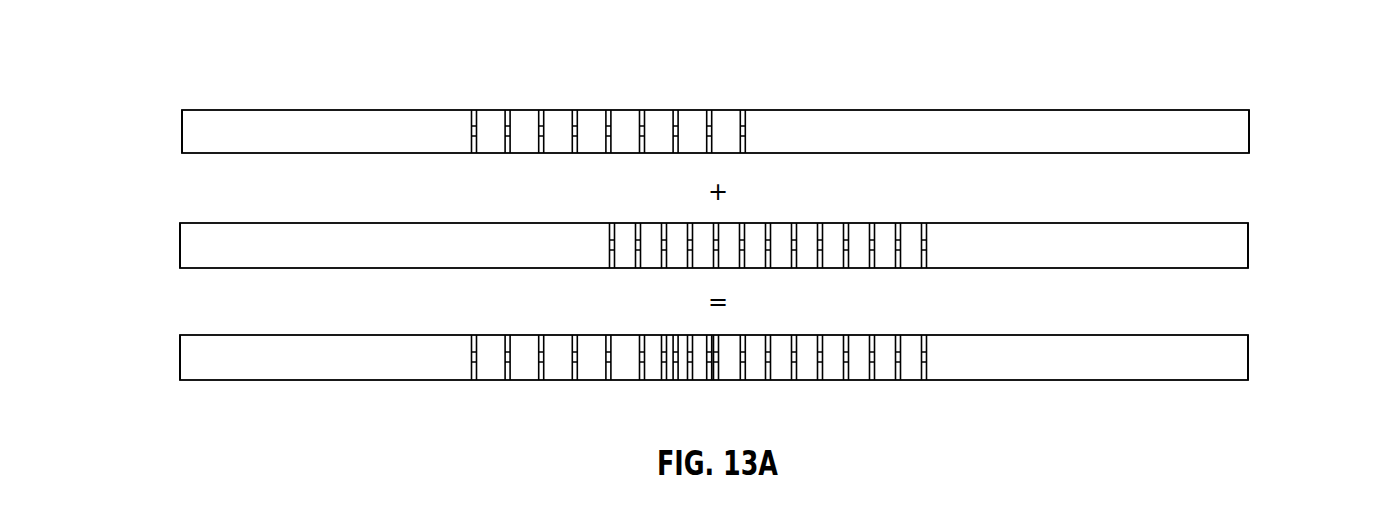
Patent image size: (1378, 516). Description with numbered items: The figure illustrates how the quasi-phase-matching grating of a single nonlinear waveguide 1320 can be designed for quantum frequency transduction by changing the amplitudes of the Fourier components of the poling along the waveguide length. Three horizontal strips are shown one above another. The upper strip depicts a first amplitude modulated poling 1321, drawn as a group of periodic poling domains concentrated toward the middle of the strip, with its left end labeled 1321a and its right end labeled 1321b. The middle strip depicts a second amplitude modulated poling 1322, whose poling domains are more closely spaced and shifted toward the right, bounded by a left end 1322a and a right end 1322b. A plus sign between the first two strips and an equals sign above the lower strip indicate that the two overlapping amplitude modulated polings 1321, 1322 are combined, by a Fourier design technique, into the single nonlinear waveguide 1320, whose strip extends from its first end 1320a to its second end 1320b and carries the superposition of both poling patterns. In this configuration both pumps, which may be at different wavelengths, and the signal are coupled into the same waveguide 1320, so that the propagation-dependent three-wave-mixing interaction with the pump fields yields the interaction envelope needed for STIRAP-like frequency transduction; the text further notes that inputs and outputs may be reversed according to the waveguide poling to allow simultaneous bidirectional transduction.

The amplitude modulated poling 1321 is at (608, 118).
The first end of first data track 1321a is at (182, 110).
The second end of first data track 1321b is at (1249, 110).
The amplitude modulated poling 1322 is at (778, 243).
The first end of second data track 1322a is at (180, 223).
The second end of second data track 1322b is at (1250, 247).
The single nonlinear waveguide 1320 is at (768, 350).
The first end of combined data track 1320a is at (180, 335).
The second end of combined data track 1320b is at (1250, 357).